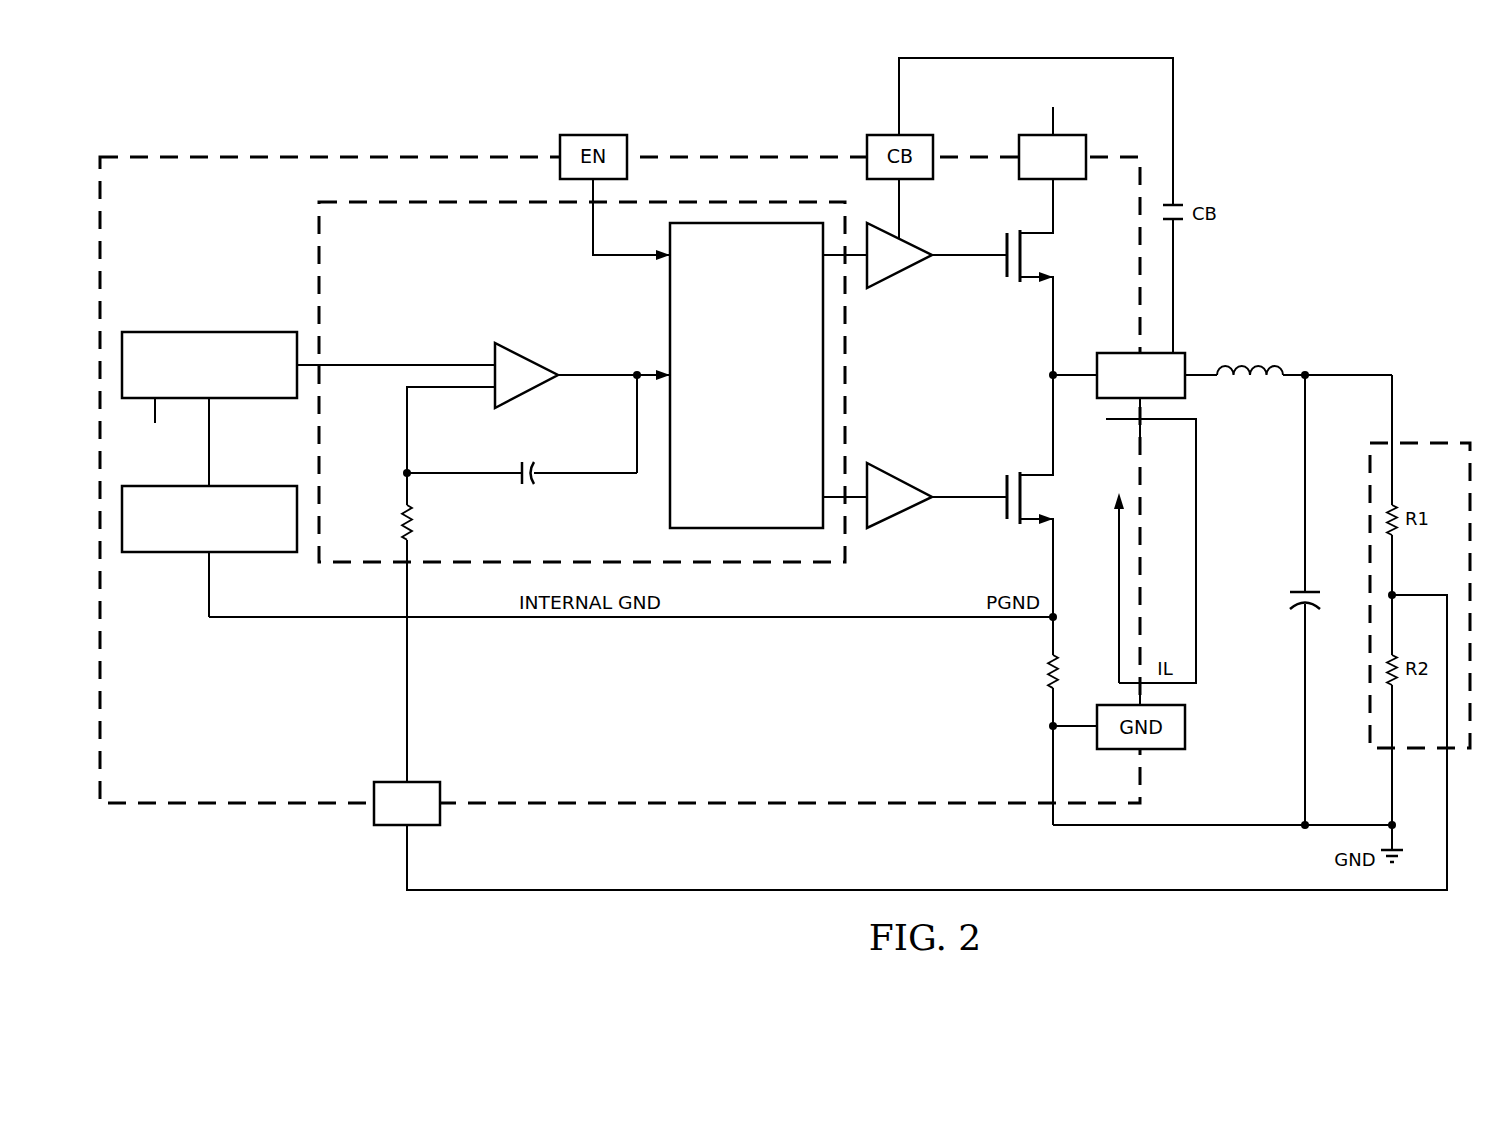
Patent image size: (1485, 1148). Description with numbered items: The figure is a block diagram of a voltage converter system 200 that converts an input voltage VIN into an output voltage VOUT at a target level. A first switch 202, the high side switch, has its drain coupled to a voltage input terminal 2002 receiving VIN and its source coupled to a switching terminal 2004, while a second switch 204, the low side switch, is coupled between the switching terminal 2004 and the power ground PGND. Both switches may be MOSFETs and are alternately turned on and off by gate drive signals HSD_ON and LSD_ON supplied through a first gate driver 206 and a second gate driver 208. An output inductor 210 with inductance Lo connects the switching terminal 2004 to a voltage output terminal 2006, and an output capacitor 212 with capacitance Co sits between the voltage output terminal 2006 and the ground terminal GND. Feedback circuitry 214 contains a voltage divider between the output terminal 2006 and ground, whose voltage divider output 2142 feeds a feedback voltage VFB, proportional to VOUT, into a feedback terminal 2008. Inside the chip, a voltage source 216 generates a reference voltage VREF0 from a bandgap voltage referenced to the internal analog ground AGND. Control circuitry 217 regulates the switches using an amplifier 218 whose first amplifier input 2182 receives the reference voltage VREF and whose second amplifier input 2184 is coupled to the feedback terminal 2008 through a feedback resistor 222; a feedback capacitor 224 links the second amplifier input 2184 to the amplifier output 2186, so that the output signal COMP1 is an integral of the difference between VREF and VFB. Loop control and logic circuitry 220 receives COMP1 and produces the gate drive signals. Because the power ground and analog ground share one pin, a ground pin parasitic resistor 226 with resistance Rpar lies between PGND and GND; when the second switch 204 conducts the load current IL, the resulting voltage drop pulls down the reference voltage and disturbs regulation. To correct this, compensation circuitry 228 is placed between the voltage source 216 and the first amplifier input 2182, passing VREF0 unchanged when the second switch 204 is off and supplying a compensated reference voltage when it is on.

The voltage converter system 200 is at (1350, 106).
The voltage input terminal 2002 is at (1086, 143).
The first switch 202 is at (1004, 249).
The first gate driver 206 is at (897, 283).
The switching terminal 2004 is at (1115, 353).
The output inductor 210 is at (1272, 358).
The feedback circuitry 214 is at (1432, 443).
The voltage output terminal 2006 is at (1333, 380).
The compensation circuitry 228 is at (195, 332).
The control circuitry 217 is at (441, 260).
The first amplifier input 2182 is at (490, 360).
The amplifier 218 is at (533, 357).
The second amplifier input 2184 is at (489, 398).
The amplifier output 2186 is at (566, 385).
The loop control and logic circuitry 220 is at (767, 447).
The second switch 204 is at (1004, 491).
The second gate driver 208 is at (897, 525).
The voltage source 216 is at (165, 552).
The feedback resistor 222 is at (403, 522).
The feedback capacitor 224 is at (528, 487).
The output capacitor 212 is at (1297, 600).
The ground pin parasitic resistor 226 is at (1048, 677).
The feedback terminal 2008 is at (390, 826).
The voltage divider output 2142 is at (1228, 892).